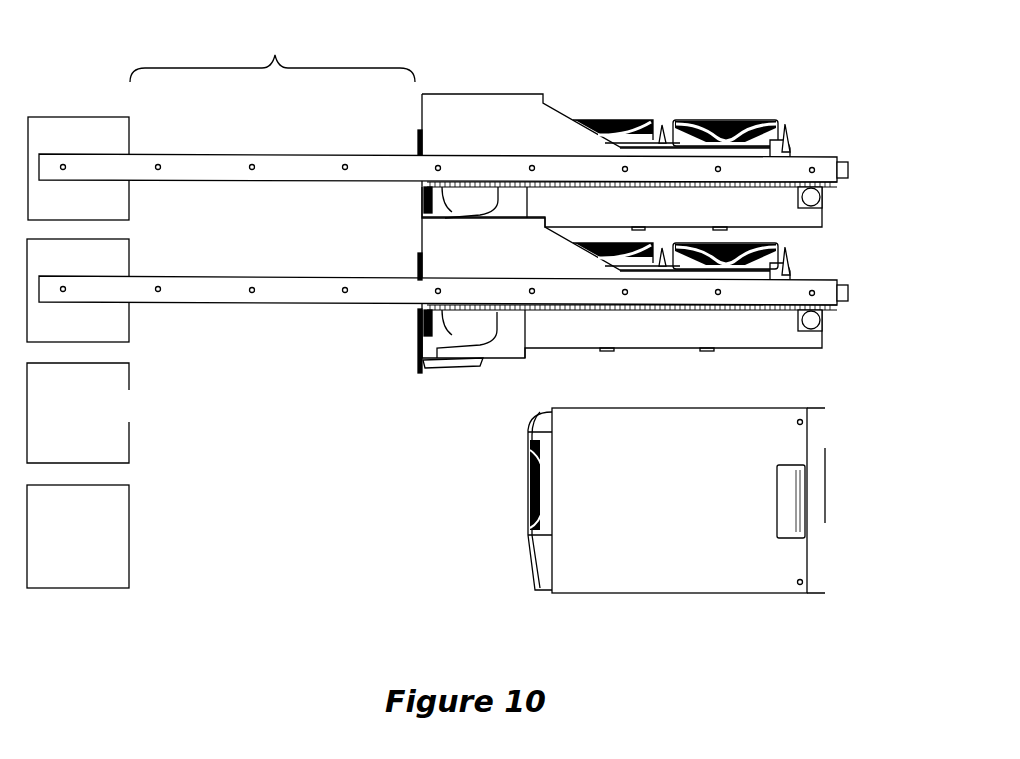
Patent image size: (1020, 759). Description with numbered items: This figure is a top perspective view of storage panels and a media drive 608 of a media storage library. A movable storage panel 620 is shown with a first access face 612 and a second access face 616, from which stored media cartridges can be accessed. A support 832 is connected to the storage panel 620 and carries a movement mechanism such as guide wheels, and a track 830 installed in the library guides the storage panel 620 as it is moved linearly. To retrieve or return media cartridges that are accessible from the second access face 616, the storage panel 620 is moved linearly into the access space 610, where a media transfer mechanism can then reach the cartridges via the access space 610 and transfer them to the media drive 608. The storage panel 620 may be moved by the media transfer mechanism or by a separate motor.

The access space 610 is at (272, 55).
The track 830 is at (219, 289).
The support 832 is at (420, 250).
The first access face 612 is at (425, 316).
The second access face 616 is at (750, 243).
The storage panel 620 is at (474, 292).
The media drive 608 is at (775, 450).